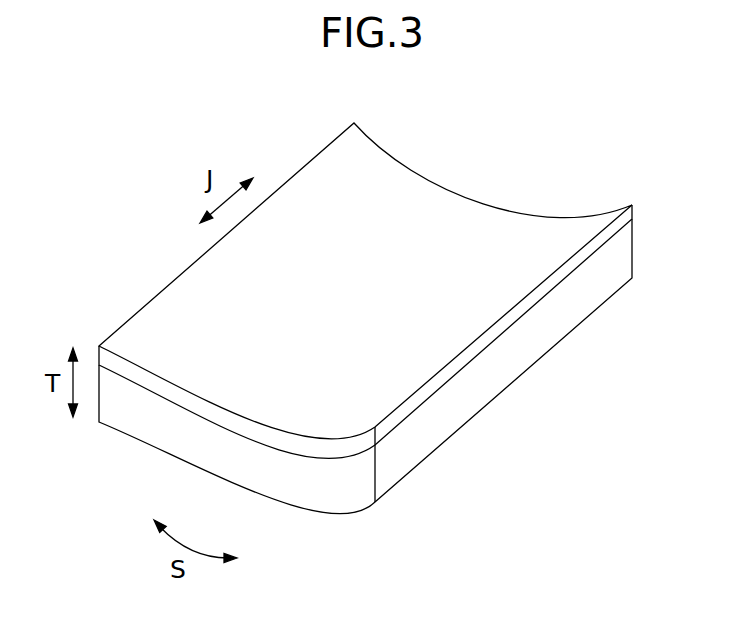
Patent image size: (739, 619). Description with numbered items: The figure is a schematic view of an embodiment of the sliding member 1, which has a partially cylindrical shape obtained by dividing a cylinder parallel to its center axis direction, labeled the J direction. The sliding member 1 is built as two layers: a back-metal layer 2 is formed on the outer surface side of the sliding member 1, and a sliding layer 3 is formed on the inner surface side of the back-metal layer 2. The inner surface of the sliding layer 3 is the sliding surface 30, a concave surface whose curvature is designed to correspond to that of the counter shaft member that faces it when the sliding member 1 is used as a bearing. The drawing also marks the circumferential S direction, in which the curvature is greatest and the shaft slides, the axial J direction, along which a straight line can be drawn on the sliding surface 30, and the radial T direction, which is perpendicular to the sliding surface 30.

The sliding member 1 is at (373, 303).
The back-metal layer 2 is at (568, 312).
The sliding layer 3 is at (634, 213).
The sliding surface 30 is at (335, 197).